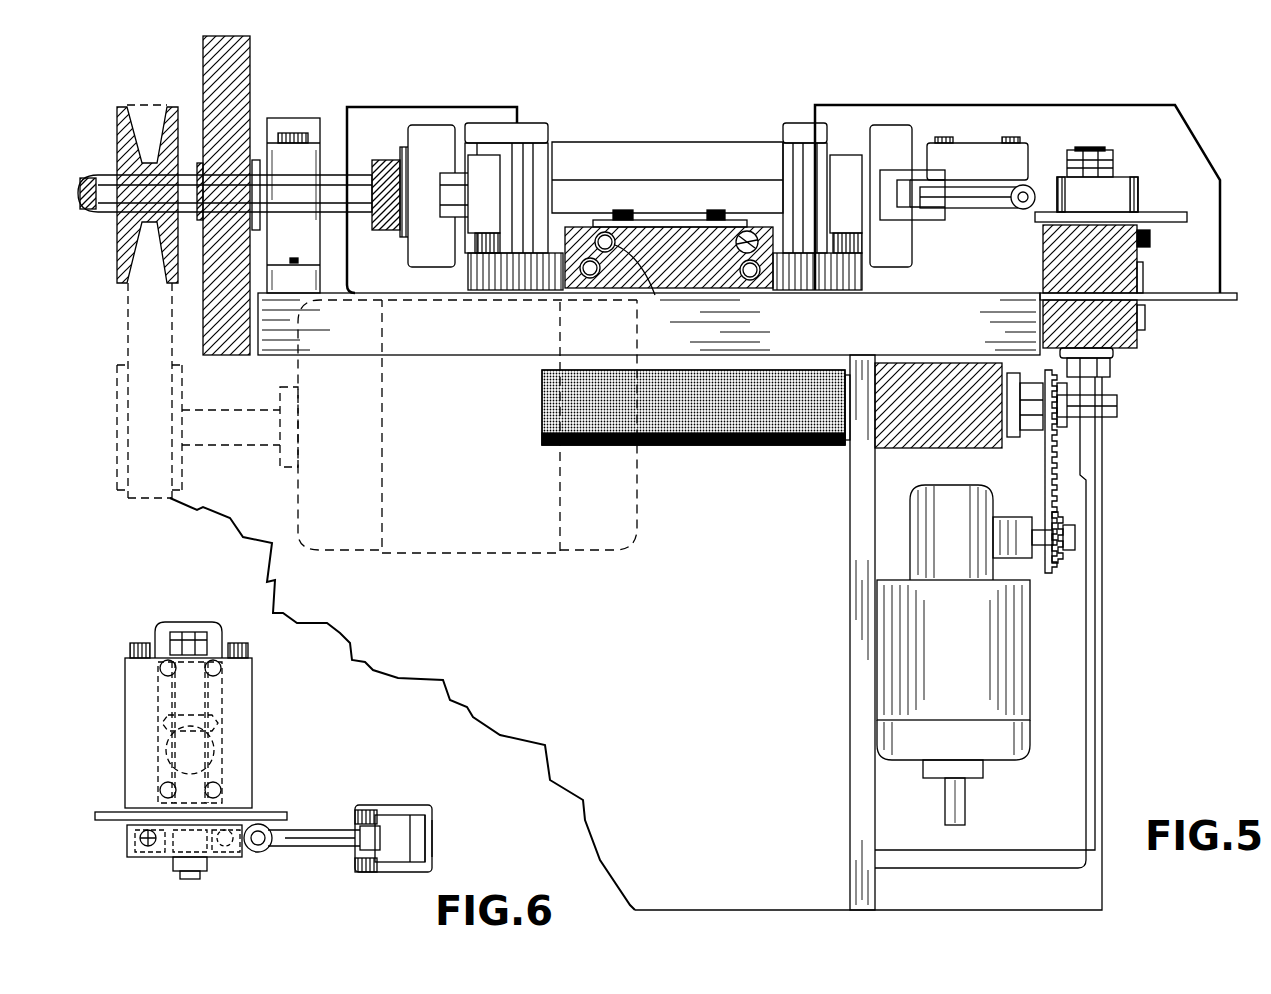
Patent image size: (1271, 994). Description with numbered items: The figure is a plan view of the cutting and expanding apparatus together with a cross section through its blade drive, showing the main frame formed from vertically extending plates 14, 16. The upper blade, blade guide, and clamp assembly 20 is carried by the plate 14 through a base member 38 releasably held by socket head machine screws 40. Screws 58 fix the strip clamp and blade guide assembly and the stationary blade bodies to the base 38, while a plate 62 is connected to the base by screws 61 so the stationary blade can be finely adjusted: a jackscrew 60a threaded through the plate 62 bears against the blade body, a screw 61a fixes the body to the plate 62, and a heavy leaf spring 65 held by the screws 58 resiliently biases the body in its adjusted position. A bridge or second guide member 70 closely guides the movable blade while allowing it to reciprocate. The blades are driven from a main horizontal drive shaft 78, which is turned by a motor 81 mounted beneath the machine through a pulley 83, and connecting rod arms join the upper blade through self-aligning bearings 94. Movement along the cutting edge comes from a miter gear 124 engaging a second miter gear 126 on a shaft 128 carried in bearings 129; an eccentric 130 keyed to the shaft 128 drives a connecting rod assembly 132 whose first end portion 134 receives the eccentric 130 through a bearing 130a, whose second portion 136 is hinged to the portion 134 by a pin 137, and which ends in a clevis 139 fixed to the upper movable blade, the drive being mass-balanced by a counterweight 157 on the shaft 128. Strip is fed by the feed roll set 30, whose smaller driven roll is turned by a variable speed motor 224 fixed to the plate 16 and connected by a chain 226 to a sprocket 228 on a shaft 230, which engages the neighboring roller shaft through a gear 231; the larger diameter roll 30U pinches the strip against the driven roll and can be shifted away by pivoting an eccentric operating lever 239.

In FIG. 5, the vertically extending plate 14 is at (978, 330).
In FIG. 5, the vertically extending plate 16 is at (848, 580).
In FIG. 5, the upper blade, blade guide, and clamp assembly 20 is at (645, 135).
In FIG. 5, the strip feed assembly 30 is at (755, 460).
In FIG. 5, the larger diameter roll 30U is at (672, 445).
In FIG. 5, the base member 38 is at (806, 282).
In FIG. 5, the socket head machine screws 40 is at (490, 235).
In FIG. 5, the screws 58 is at (622, 210).
In FIG. 5, the jackscrew 60a is at (743, 231).
In FIG. 5, the screws 61 is at (590, 258).
In FIG. 5, the screw 61a is at (643, 277).
In FIG. 5, the plate 62 is at (693, 270).
In FIG. 5, the leaf spring 65 is at (645, 220).
In FIG. 5, the bridge or second guide member 70 is at (735, 142).
In FIG. 5, the drive shaft 78 is at (337, 185).
In FIG. 5, the motor 81 is at (505, 553).
In FIG. 5, the pulley 83 is at (130, 232).
In FIG. 5, the self-aligning bearings 94 is at (478, 175).
In FIG. 6, the miter gear 124 is at (175, 747).
In FIG. 6, the second miter gear 126 is at (215, 718).
In FIG. 6, the shaft 128 is at (185, 697).
In FIG. 6, the bearings 129 is at (222, 668).
In FIG. 6, the eccentric 130 is at (130, 848).
In FIG. 6, the bearing 130a is at (138, 833).
In FIG. 5, the connecting rod assembly 132 is at (975, 143).
In FIG. 6, the connecting rod assembly 132 is at (300, 855).
In FIG. 5, the first end portion 134 is at (1138, 180).
In FIG. 6, the first end portion 134 is at (208, 858).
In FIG. 5, the second portion 136 is at (970, 210).
In FIG. 6, the second portion 136 is at (300, 830).
In FIG. 5, the pin 137 is at (1025, 192).
In FIG. 5, the clevis 139 is at (912, 222).
In FIG. 6, the clevis 139 is at (395, 815).
In FIG. 5, the counterweight 157 is at (1187, 218).
In FIG. 5, the variable speed motor 224 is at (880, 745).
In FIG. 5, the chain 226 is at (1060, 566).
In FIG. 5, the sprocket 228 is at (1060, 425).
In FIG. 5, the shaft 230 is at (1117, 400).
In FIG. 5, the gear 231 is at (1022, 437).
In FIG. 5, the eccentric operating lever 239 is at (1005, 410).